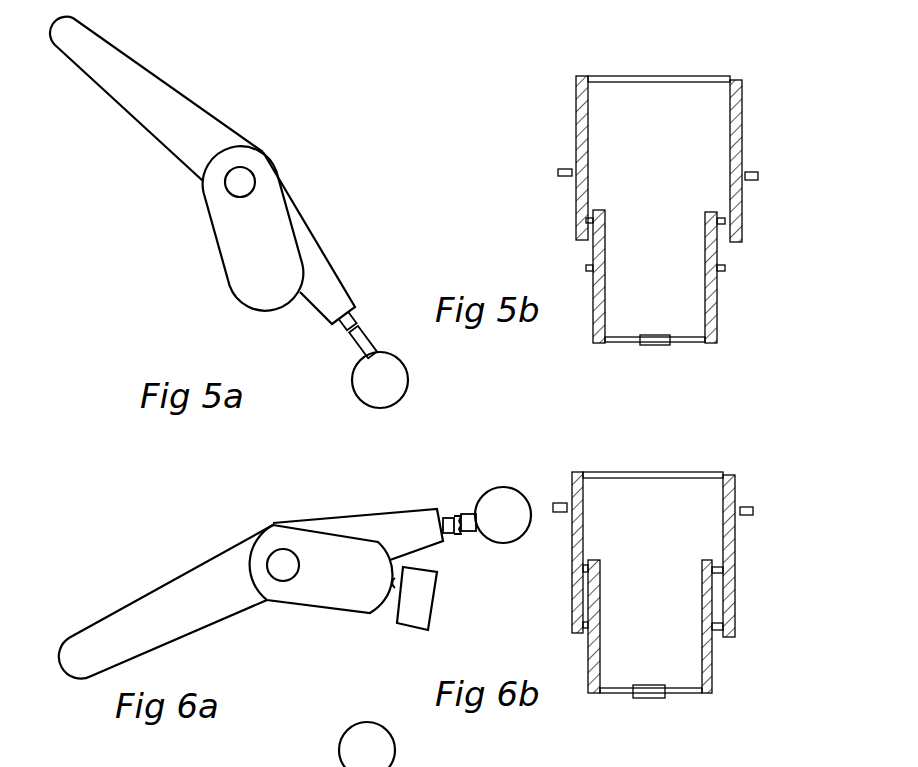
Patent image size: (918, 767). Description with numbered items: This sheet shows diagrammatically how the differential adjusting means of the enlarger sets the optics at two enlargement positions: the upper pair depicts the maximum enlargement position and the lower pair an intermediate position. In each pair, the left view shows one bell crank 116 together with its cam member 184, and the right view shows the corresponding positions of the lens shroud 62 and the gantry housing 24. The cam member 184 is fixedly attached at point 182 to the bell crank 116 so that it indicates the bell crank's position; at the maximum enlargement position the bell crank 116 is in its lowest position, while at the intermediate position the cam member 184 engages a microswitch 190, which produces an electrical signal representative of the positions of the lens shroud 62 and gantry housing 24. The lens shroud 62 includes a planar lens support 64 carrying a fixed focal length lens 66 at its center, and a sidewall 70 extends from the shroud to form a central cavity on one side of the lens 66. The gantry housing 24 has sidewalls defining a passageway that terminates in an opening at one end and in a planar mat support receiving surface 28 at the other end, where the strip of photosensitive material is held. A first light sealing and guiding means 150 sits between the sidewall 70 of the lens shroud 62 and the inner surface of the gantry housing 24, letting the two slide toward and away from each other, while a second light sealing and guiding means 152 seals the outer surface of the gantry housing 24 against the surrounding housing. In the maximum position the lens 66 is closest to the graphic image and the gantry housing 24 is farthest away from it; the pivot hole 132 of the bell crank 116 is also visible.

In FIG. 5A, the bell crank 116 is at (277, 120).
In FIG. 6A, the bell crank 116 is at (378, 508).
In FIG. 5A, the pivot hole 132 is at (235, 183).
In FIG. 5A, the cam member 184 is at (237, 244).
In FIG. 6A, the cam member 184 is at (307, 600).
In FIG. 6A, the point 182 is at (278, 557).
In FIG. 6A, the microswitch 190 is at (433, 605).
In FIG. 5B, the gantry housing 24 is at (715, 132).
In FIG. 6B, the gantry housing 24 is at (713, 525).
In FIG. 5B, the planar mat support receiving surface 28 is at (713, 78).
In FIG. 6B, the planar mat support receiving surface 28 is at (700, 473).
In FIG. 5B, the second light sealing and guiding means 152 is at (557, 171).
In FIG. 6B, the second light sealing and guiding means 152 is at (557, 503).
In FIG. 5B, the first light sealing and guiding means 150 is at (585, 267).
In FIG. 6B, the first light sealing and guiding means 150 is at (583, 622).
In FIG. 5B, the lens shroud 62 is at (700, 312).
In FIG. 6B, the lens shroud 62 is at (706, 659).
In FIG. 5B, the sidewall 70 is at (707, 267).
In FIG. 6B, the sidewall 70 is at (702, 652).
In FIG. 5B, the planar lens support 64 is at (697, 343).
In FIG. 5B, the fixed focal length lens 66 is at (640, 345).
In FIG. 6B, the fixed focal length lens 66 is at (642, 698).